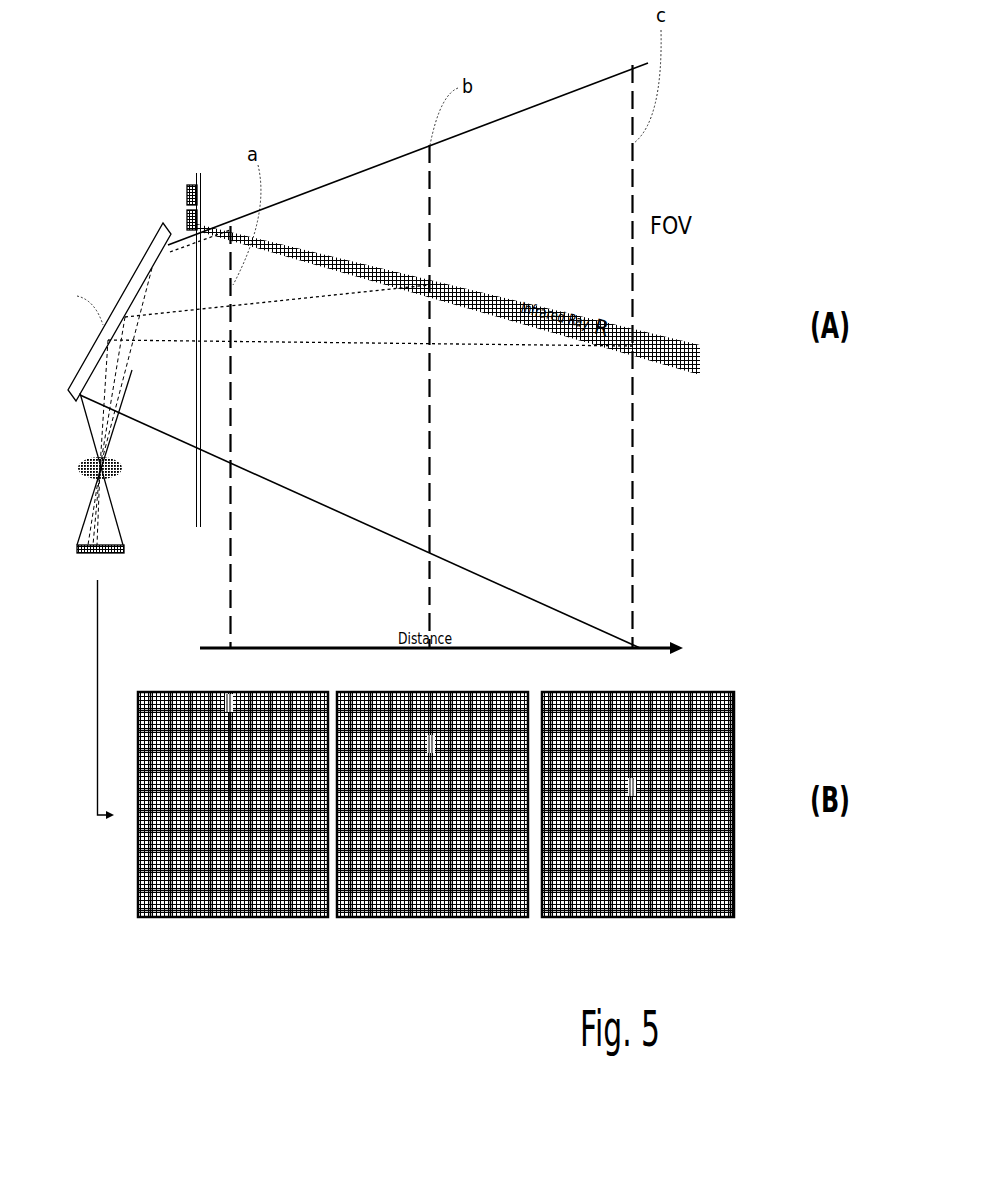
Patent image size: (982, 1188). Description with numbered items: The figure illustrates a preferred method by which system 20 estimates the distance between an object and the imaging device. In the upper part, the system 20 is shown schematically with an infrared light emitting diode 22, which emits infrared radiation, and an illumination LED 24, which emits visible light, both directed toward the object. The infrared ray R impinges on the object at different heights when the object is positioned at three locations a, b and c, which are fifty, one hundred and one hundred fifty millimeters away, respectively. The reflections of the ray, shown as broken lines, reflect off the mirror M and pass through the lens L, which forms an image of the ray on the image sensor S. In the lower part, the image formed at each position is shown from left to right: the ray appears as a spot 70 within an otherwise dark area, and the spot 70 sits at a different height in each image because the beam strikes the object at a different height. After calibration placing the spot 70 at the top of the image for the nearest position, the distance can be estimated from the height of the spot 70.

The system 20 is at (339, 328).
The infrared light emitting diode 22 is at (187, 214).
The illumination LED 24 is at (190, 185).
The spot 70 is at (221, 708).